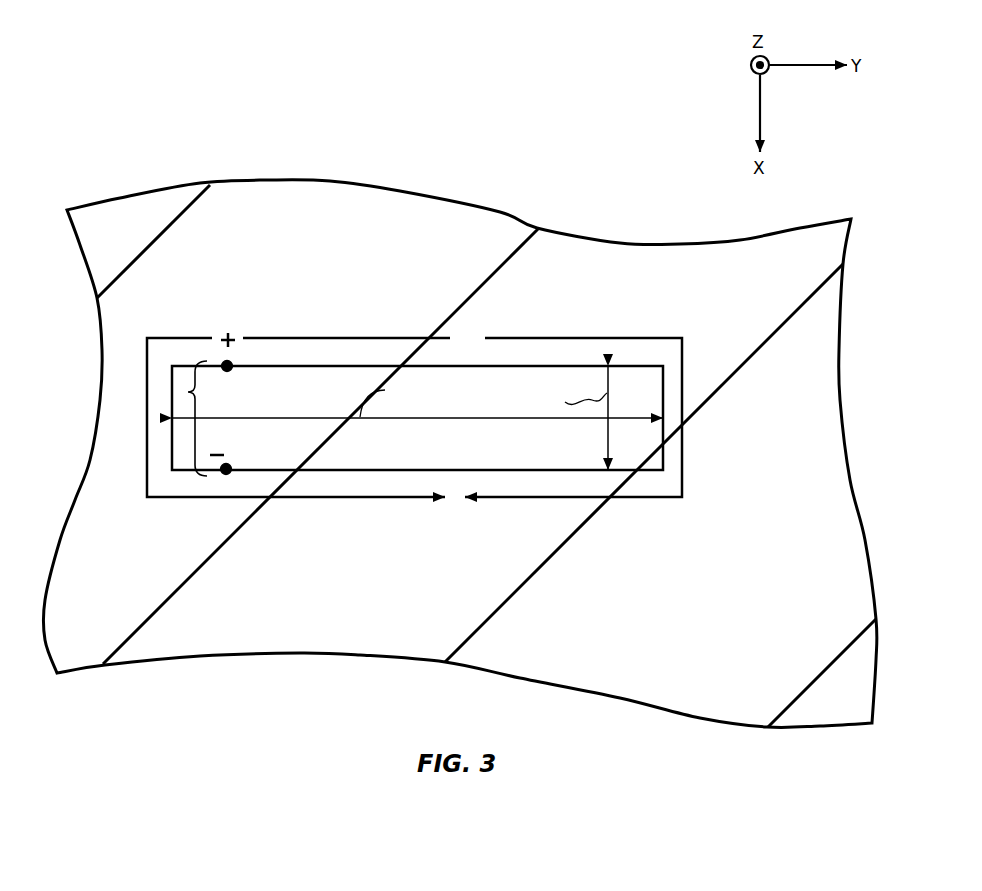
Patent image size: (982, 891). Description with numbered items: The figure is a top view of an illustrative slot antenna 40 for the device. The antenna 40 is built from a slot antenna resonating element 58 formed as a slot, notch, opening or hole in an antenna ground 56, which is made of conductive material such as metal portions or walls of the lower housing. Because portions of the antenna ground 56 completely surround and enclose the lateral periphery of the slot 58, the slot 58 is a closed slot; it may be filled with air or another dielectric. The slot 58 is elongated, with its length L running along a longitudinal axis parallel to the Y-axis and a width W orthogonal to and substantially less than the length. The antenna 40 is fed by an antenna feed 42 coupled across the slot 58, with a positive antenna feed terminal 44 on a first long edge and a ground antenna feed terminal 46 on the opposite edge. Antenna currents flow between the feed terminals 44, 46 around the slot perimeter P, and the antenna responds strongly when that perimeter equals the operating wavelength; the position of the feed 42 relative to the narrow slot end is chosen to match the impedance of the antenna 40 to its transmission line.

The antenna 40 is at (460, 405).
The antenna feed 42 is at (193, 392).
The positive antenna feed terminal 44 is at (229, 371).
The ground antenna feed terminal 46 is at (232, 460).
The antenna ground 56 is at (310, 188).
The slot antenna resonating element 58 is at (320, 377).